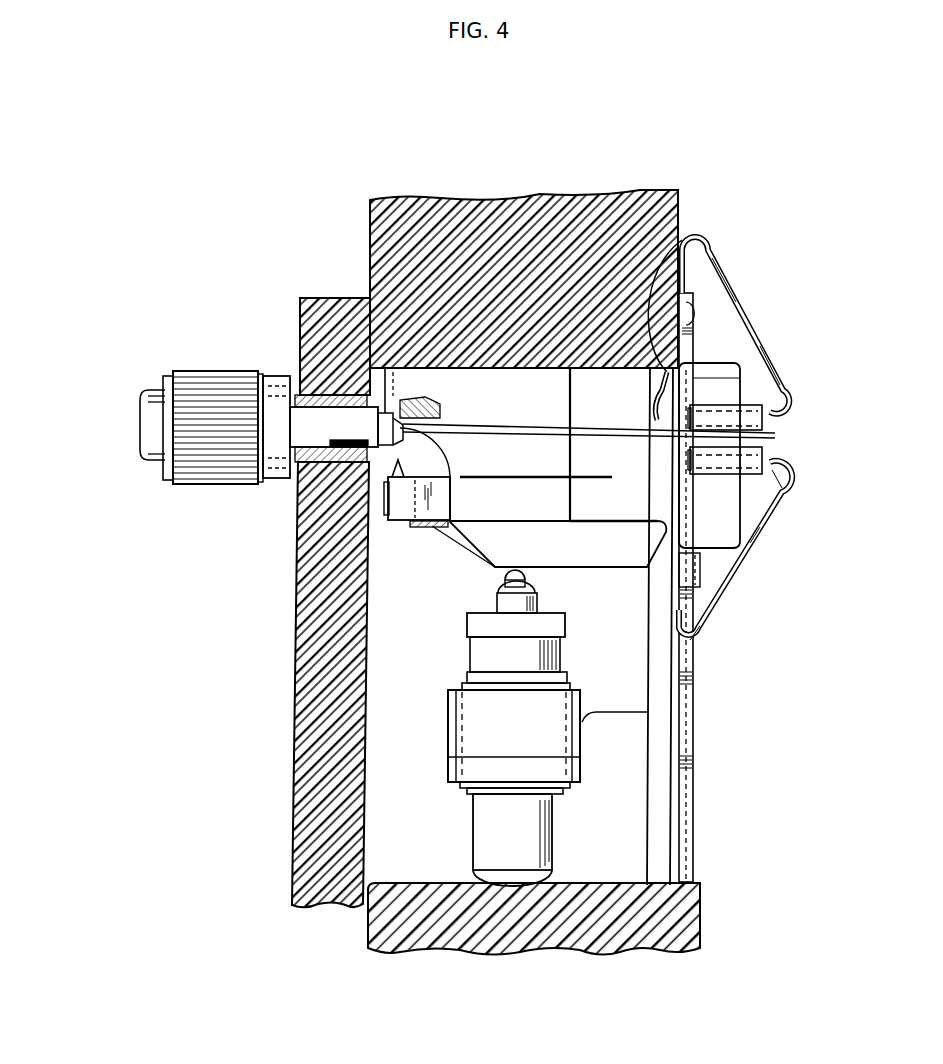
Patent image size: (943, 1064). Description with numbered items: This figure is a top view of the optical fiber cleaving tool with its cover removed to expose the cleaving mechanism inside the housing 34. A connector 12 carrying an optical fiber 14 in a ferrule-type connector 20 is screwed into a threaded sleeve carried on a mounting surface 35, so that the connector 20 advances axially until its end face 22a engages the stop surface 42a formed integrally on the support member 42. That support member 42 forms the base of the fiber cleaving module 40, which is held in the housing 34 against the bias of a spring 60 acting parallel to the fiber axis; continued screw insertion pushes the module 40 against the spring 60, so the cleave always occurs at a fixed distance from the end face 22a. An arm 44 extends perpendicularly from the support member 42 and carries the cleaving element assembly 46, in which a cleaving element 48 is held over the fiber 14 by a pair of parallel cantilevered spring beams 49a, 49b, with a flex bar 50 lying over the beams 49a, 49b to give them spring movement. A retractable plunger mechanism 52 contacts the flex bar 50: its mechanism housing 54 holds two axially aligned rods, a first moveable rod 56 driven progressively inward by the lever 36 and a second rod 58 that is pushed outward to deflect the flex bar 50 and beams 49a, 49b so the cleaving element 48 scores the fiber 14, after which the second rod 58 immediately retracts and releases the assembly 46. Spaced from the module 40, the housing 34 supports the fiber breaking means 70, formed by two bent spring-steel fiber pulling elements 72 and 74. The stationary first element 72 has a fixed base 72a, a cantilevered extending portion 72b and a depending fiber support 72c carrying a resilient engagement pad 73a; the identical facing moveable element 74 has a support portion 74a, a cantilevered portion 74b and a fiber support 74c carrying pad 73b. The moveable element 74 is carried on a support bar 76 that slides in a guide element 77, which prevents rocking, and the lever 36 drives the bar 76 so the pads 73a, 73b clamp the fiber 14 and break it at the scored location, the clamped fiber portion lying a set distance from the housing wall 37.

The connector 12 is at (175, 487).
The optical fiber 14 is at (773, 432).
The connector 20 is at (315, 413).
The end face 22a is at (258, 480).
The housing 34 is at (509, 196).
The mounting surface 35 is at (308, 620).
The lever 36 is at (612, 960).
The housing wall 37 is at (681, 190).
The fiber cleaving module 40 is at (640, 678).
The support member 42 is at (340, 312).
The stop surface 42a is at (395, 373).
The arm 44 is at (612, 503).
The cleaving element assembly 46 is at (432, 524).
The cleaving element 48 is at (395, 465).
The cantilevered spring beam 49a is at (478, 477).
The cantilevered spring beam 49b is at (473, 522).
The flex bar 50 is at (536, 567).
The plunger mechanism 52 is at (510, 728).
The mechanism housing 54 is at (582, 750).
The first moveable rod 56 is at (535, 841).
The second rod 58 is at (480, 590).
The spring 60 is at (680, 238).
The fiber breaking means 70 is at (788, 362).
The first fiber pulling element 72 is at (748, 325).
The fixed base 72a is at (690, 344).
The cantilevered extending portion 72b is at (735, 300).
The depending fiber support 72c is at (780, 365).
The fiber engagement pad 73a is at (770, 410).
The fiber engagement pad 73b is at (772, 460).
The second fiber pulling element 74 is at (750, 560).
The support portion 74a is at (695, 612).
The cantilevered extending portion 74b is at (765, 533).
The fiber support portion 74c is at (758, 492).
The support bar 76 is at (690, 766).
The guide element 77 is at (722, 278).